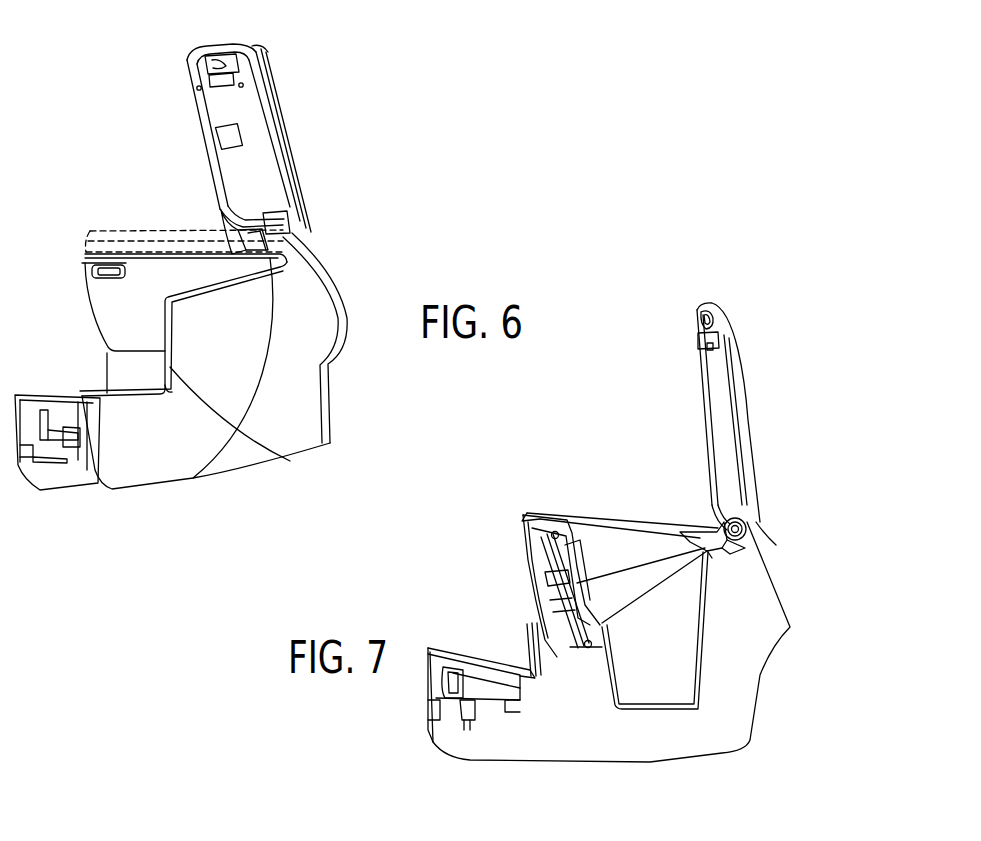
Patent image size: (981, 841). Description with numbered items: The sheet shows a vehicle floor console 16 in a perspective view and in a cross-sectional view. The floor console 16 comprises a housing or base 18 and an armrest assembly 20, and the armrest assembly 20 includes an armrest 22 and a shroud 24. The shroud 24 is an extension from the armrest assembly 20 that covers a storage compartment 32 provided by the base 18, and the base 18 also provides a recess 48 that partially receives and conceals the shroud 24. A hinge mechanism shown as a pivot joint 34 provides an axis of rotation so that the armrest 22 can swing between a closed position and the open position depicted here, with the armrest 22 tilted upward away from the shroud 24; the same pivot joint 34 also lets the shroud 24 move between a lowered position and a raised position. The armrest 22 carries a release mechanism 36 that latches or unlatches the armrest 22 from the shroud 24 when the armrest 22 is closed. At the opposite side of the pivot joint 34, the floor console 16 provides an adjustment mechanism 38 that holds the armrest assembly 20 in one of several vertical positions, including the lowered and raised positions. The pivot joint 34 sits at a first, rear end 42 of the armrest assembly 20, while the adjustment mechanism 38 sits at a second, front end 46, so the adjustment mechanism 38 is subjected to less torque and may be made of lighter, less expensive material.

In FIG. 6, the floor console 16 is at (197, 347).
In FIG. 7, the floor console 16 is at (616, 620).
In FIG. 6, the base 18 is at (328, 394).
In FIG. 7, the base 18 is at (787, 595).
In FIG. 6, the armrest assembly 20 is at (206, 149).
In FIG. 7, the armrest assembly 20 is at (717, 416).
In FIG. 6, the armrest 22 is at (278, 93).
In FIG. 7, the armrest 22 is at (738, 374).
In FIG. 6, the shroud 24 is at (210, 273).
In FIG. 7, the shroud 24 is at (635, 528).
In FIG. 7, the storage compartment 32 is at (665, 600).
In FIG. 6, the pivot joint 34 is at (220, 208).
In FIG. 7, the pivot joint 34 is at (722, 522).
In FIG. 6, the release mechanism 36 is at (197, 73).
In FIG. 7, the release mechanism 36 is at (700, 324).
In FIG. 7, the adjustment mechanism 38 is at (567, 533).
In FIG. 7, the first end 42 is at (764, 520).
In FIG. 7, the second end 46 is at (537, 510).
In FIG. 6, the recess 48 is at (167, 363).
In FIG. 7, the recess 48 is at (532, 625).